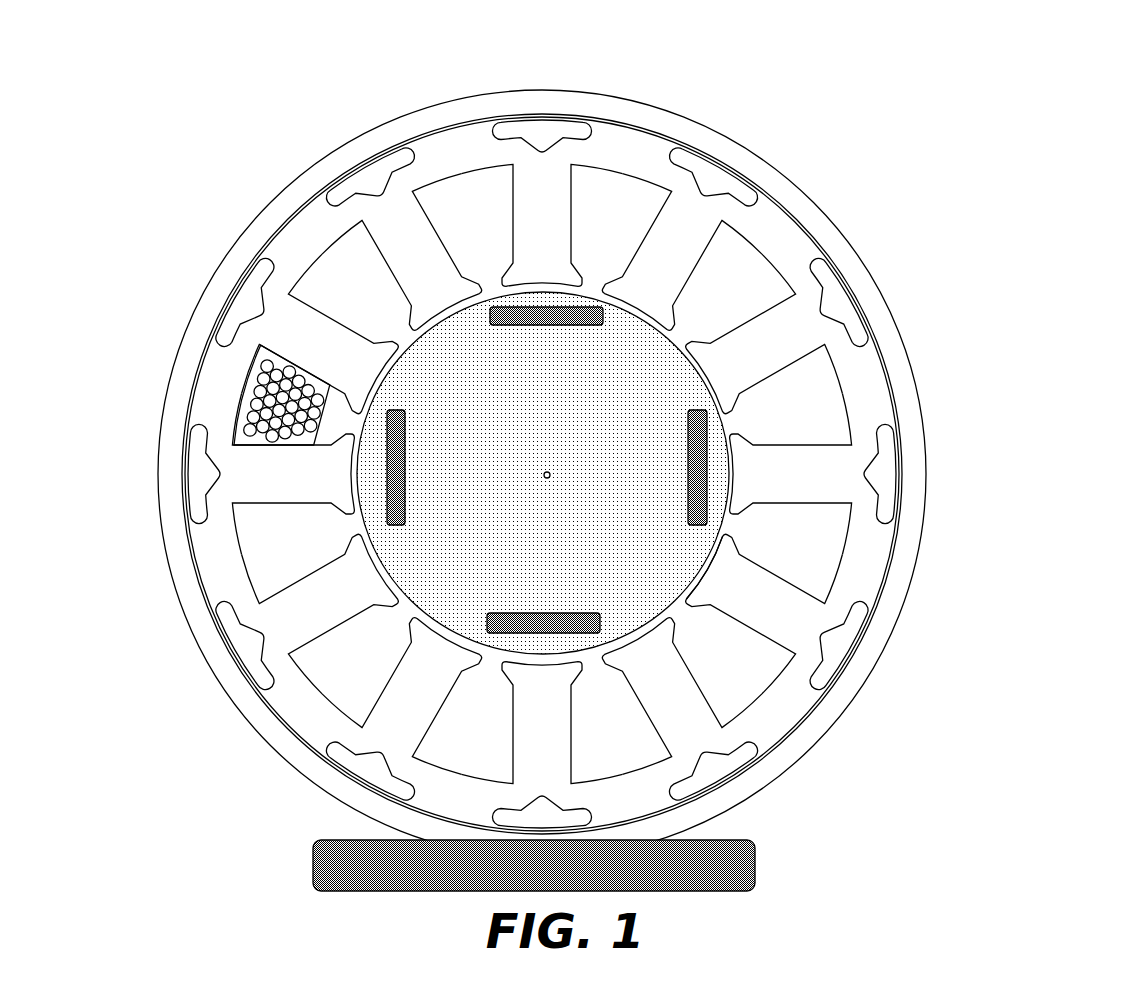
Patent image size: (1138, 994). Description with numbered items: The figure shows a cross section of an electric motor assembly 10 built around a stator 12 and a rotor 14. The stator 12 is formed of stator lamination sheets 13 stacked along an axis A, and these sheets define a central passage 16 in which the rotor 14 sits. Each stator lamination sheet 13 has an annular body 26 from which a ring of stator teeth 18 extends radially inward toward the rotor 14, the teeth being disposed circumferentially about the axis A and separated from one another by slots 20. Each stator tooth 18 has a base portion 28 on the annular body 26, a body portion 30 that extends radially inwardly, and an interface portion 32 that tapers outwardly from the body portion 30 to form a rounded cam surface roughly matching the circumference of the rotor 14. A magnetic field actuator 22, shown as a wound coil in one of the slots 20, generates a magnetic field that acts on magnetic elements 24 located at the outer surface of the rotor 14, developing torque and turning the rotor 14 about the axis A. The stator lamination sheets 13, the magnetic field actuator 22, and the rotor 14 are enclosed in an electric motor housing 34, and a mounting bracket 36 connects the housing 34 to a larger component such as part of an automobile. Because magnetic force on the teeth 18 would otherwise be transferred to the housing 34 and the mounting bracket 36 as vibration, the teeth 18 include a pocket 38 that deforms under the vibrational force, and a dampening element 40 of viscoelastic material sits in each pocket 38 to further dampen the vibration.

The electric motor assembly 10 is at (1050, 172).
The stator 12 is at (592, 474).
The stator lamination sheets 13 is at (772, 198).
The rotor 14 is at (540, 430).
The passage 16 is at (559, 522).
The stator teeth 18 is at (543, 213).
The slots 20 is at (602, 218).
The magnetic field actuator 22 is at (250, 400).
The magnetic elements 24 is at (387, 467).
The annular body 26 is at (867, 560).
The base portion 28 is at (865, 448).
The body portion 30 is at (778, 617).
The interface portion 32 is at (728, 550).
The electric motor housing 34 is at (927, 470).
The mounting bracket 36 is at (760, 880).
The pocket 38 is at (552, 136).
The dampening element 40 is at (373, 177).
The axis A is at (550, 474).